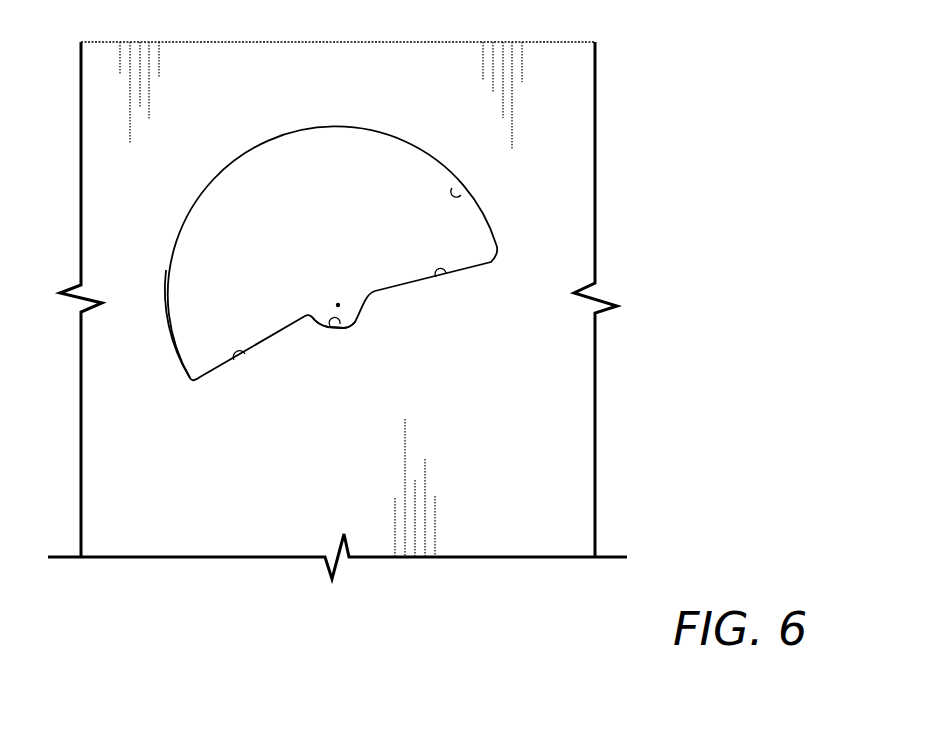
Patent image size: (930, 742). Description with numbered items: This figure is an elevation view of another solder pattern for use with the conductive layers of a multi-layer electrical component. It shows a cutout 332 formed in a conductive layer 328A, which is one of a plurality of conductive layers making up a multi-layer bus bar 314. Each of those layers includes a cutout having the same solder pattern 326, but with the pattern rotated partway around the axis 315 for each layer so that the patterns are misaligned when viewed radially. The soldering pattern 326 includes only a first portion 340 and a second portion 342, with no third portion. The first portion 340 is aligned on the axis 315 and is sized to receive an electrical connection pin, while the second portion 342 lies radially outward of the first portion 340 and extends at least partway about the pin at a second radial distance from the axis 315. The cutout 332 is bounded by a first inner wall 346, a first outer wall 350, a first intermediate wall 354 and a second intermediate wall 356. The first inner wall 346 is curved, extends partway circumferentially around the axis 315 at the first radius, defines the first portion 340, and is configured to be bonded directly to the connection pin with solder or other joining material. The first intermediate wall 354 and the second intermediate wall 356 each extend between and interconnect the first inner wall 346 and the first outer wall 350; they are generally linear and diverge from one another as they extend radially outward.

The multi-layer bus bar 314 is at (600, 100).
The conductive layer 328A is at (206, 78).
The cutout 332 is at (364, 103).
The second portion 342 is at (282, 160).
The solder pattern 326 is at (158, 332).
The first portion 340 is at (319, 293).
The axis 315 is at (340, 300).
The first outer wall 350 is at (466, 189).
The second intermediate wall 356 is at (447, 272).
The first intermediate wall 354 is at (232, 360).
The first inner wall 346 is at (333, 328).